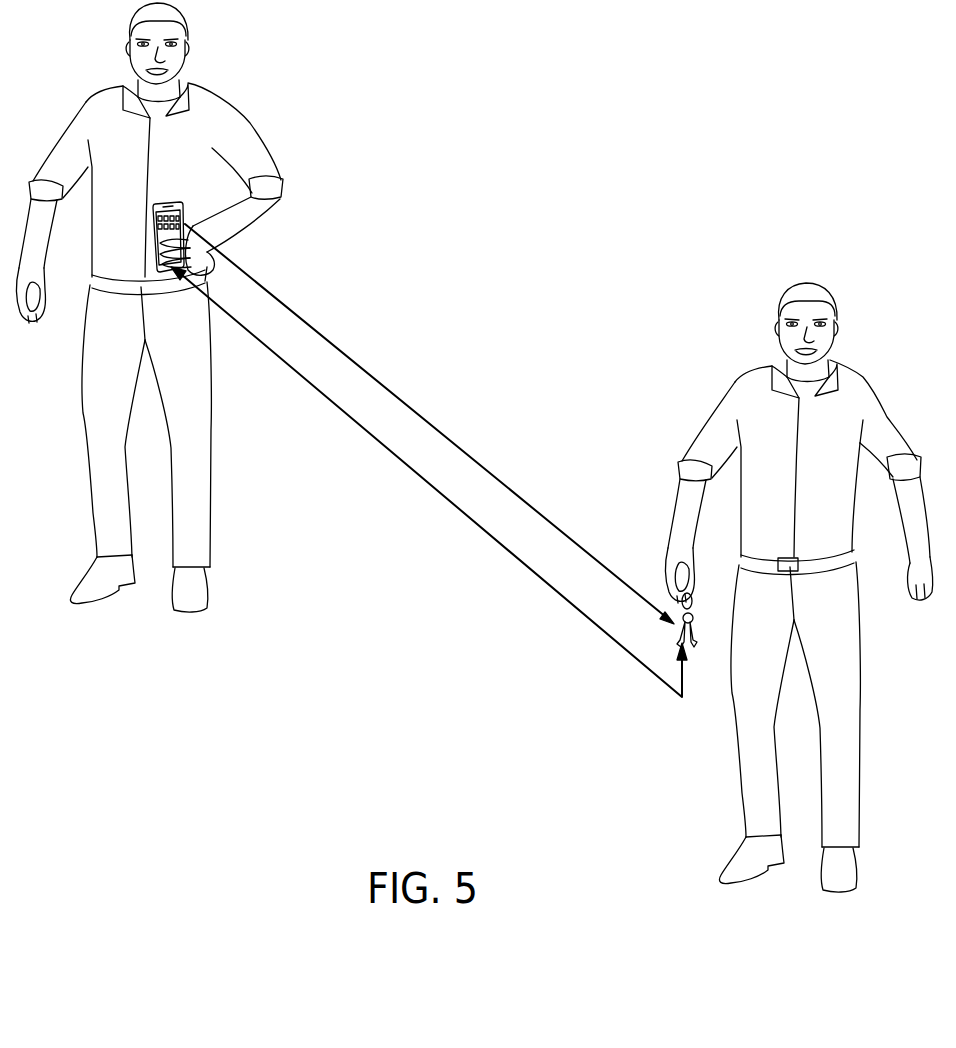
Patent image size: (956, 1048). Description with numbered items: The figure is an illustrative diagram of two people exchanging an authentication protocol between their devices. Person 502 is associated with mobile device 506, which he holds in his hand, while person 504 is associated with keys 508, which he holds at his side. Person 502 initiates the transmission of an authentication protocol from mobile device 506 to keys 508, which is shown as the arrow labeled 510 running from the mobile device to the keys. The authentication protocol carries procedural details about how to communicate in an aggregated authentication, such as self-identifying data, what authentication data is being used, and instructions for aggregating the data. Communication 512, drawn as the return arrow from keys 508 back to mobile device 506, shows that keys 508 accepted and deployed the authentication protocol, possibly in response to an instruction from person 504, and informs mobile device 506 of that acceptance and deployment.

The person 502 is at (187, 38).
The person 504 is at (778, 315).
The mobile device 506 is at (182, 203).
The keys 508 is at (698, 633).
The transmission of authentication protocol 510 is at (583, 552).
The communication 512 is at (556, 592).